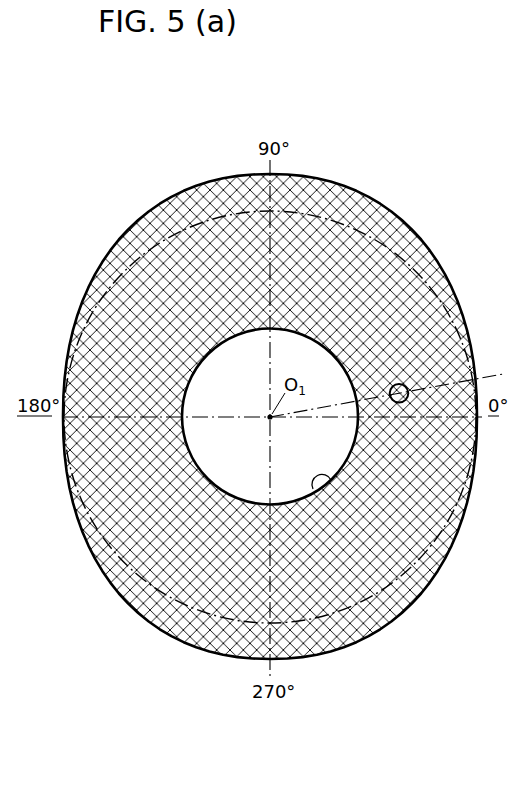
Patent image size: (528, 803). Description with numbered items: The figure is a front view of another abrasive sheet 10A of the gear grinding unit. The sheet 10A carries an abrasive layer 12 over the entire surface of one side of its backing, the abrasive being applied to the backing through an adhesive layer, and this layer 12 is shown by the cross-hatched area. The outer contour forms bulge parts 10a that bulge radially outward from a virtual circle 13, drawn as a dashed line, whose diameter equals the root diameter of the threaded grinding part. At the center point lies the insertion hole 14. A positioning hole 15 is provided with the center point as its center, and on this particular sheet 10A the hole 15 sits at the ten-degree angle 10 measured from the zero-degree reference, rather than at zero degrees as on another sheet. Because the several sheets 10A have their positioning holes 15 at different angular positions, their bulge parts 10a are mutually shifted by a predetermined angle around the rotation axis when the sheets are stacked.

The abrasive sheet 10A is at (283, 394).
The bulge parts 10a is at (292, 190).
The abrasive layer 12 is at (408, 298).
The virtual circle 13 is at (375, 201).
The insertion hole 14 is at (333, 481).
The positioning hole 15 is at (409, 401).
The radial reference line 10 is at (399, 390).